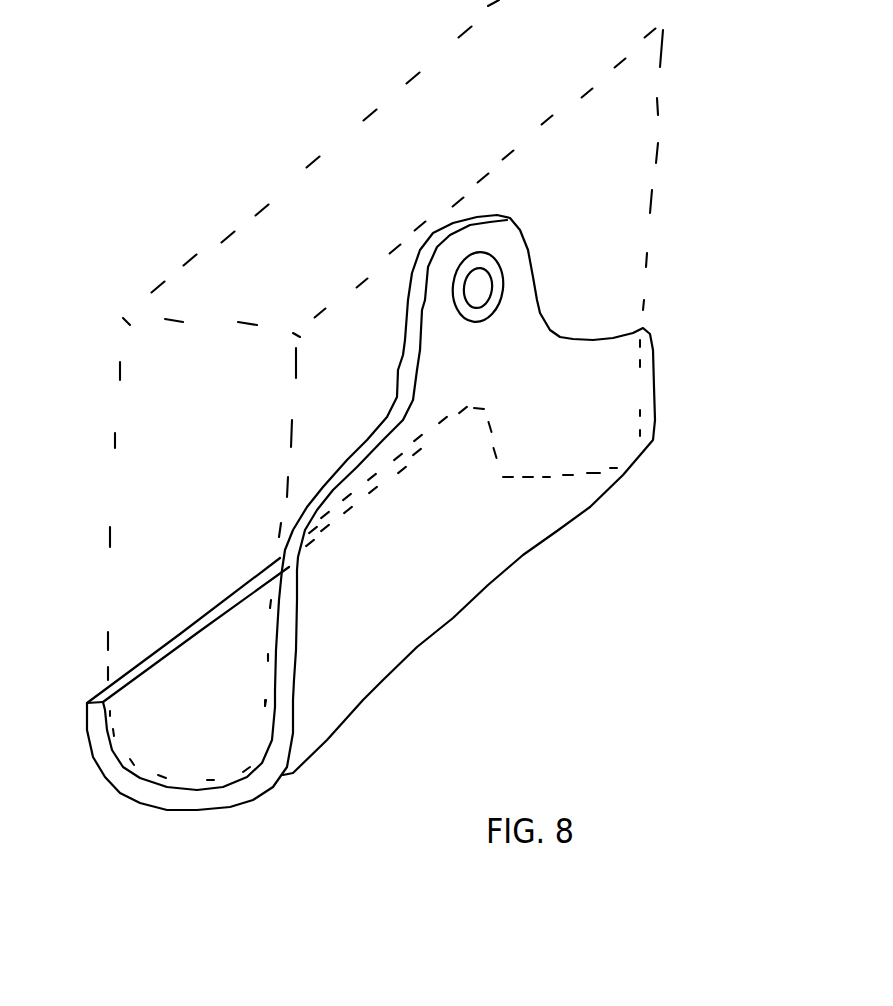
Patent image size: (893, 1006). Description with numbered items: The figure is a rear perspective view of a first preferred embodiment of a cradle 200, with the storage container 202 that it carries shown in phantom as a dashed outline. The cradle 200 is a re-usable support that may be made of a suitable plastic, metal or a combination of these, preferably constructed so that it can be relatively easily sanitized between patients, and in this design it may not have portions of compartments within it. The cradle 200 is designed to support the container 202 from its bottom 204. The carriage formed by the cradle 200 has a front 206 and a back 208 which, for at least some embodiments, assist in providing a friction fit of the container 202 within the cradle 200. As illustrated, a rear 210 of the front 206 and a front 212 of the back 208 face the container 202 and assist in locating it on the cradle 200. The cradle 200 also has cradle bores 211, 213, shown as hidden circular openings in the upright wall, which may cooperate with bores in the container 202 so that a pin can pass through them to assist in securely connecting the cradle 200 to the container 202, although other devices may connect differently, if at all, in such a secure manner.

The cradle 200 is at (514, 495).
The container 202 is at (431, 353).
The bottom 204 is at (215, 778).
The front 206 is at (117, 745).
The back 208 is at (267, 745).
The rear of the front 210 is at (196, 635).
The cradle bore 211 is at (375, 520).
The front of the back 212 is at (183, 630).
The cradle bore 213 is at (577, 390).